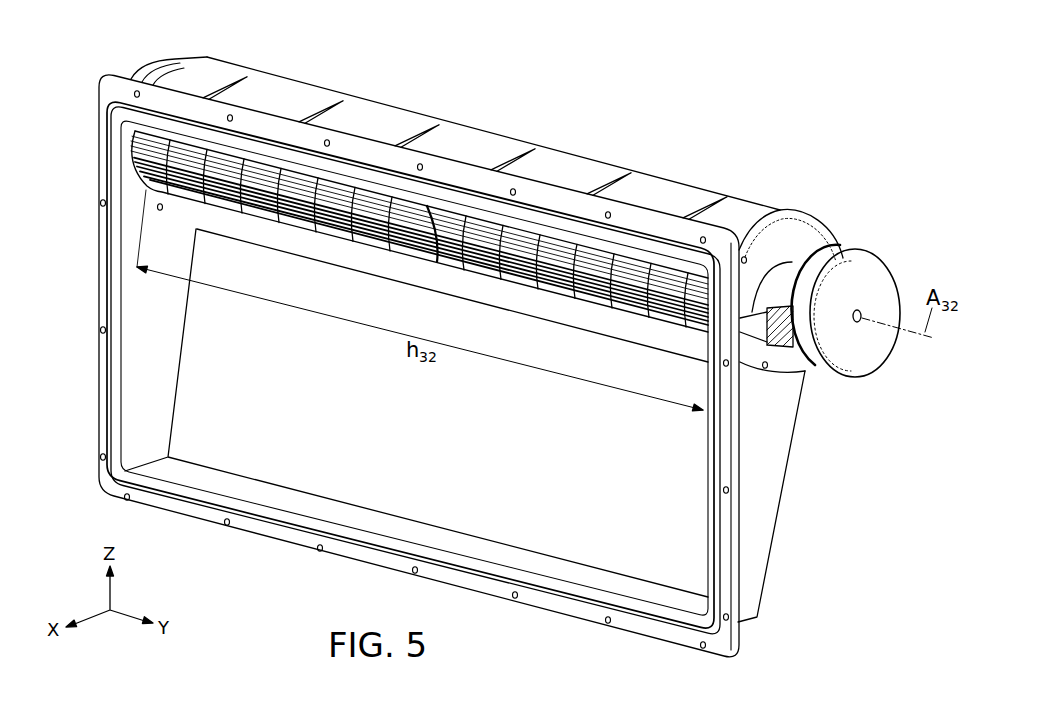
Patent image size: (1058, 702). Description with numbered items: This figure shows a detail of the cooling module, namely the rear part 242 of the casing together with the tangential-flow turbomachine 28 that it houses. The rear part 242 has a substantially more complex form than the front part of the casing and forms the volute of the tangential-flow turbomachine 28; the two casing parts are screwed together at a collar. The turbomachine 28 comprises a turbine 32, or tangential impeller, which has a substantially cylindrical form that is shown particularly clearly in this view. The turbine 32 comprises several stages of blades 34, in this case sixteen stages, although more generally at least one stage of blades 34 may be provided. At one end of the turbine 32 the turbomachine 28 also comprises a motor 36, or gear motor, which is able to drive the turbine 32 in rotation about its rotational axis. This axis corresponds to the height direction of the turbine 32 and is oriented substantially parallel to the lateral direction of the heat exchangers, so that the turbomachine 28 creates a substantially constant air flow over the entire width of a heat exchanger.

The rear part of the casing 242 is at (765, 473).
The tangential-flow turbomachine 28 is at (898, 359).
The turbine 32 is at (434, 274).
The blades 34 is at (380, 250).
The motor 36 is at (875, 280).